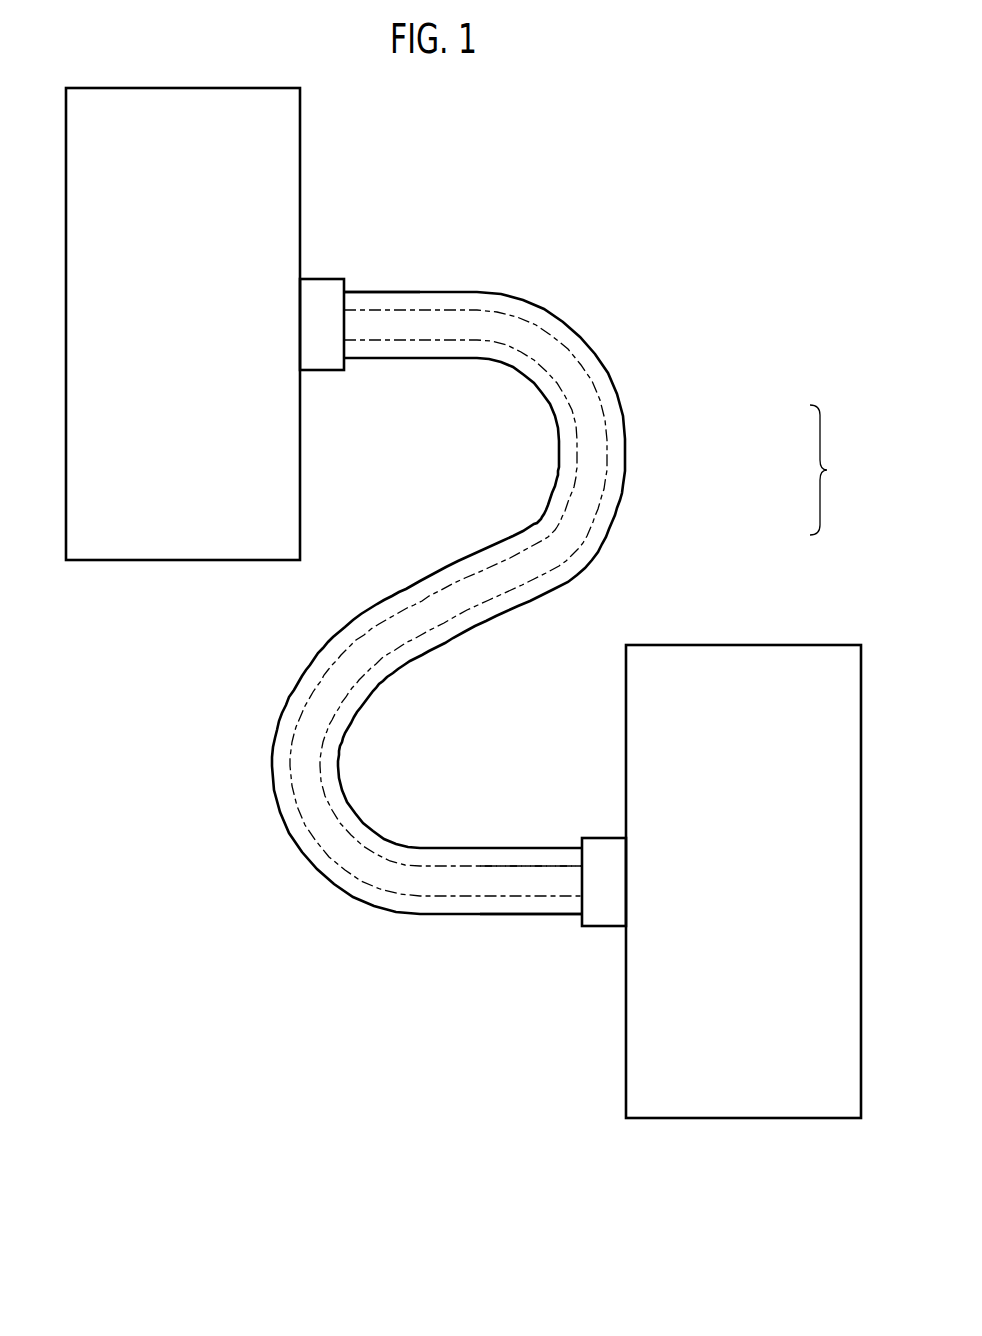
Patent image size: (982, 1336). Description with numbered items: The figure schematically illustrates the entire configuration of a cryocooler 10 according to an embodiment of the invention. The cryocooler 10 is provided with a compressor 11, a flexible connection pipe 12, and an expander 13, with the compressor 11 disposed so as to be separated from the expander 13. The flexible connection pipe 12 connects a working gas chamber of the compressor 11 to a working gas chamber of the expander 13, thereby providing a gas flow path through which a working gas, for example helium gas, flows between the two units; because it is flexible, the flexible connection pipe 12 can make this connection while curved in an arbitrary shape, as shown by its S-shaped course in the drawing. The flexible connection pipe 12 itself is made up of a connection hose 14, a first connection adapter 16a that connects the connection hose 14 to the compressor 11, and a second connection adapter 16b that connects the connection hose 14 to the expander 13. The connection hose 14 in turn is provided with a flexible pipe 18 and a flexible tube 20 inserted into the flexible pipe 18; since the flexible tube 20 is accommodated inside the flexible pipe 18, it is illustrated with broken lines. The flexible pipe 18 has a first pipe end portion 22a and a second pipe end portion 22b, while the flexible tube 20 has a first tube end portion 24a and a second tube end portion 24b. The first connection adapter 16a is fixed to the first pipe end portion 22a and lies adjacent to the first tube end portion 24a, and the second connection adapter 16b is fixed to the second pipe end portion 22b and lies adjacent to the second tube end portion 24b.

The cryocooler 10 is at (418, 1248).
The compressor 11 is at (110, 560).
The flexible connection pipe 12 is at (566, 628).
The expander 13 is at (791, 1118).
The connection hose 14 is at (835, 470).
The first connection adapter 16a is at (328, 279).
The second connection adapter 16b is at (602, 927).
The flexible pipe 18 is at (627, 452).
The flexible tube 20 is at (597, 520).
The first pipe end portion 22a is at (374, 292).
The second pipe end portion 22b is at (550, 915).
The first tube end portion 24a is at (370, 341).
The second tube end portion 24b is at (551, 866).